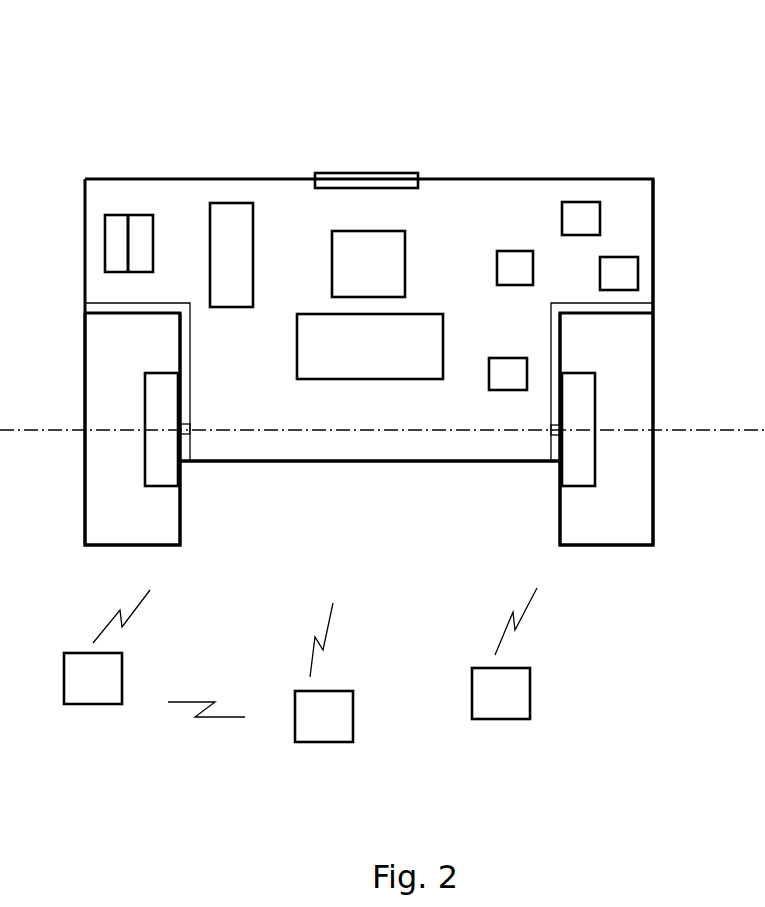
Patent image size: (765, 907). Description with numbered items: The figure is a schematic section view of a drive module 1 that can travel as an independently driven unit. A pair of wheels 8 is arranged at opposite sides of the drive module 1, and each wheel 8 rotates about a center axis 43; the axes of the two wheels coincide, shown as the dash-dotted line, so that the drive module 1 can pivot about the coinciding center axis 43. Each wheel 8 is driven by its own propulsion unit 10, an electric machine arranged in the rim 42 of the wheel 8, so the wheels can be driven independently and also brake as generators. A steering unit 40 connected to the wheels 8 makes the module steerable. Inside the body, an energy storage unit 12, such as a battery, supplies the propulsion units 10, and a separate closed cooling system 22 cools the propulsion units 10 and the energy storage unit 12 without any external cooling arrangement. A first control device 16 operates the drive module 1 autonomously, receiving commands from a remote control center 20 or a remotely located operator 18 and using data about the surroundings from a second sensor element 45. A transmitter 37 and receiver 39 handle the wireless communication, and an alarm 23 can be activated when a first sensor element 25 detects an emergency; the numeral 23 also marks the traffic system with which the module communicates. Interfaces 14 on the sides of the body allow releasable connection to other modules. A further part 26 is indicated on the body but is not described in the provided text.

The drive module 1 is at (157, 92).
The wheels 8 is at (180, 513).
The propulsion unit 10 is at (180, 472).
The energy storage unit 12 is at (443, 345).
The interface 14 is at (393, 173).
The first control device 16 is at (332, 231).
The operator 18 is at (530, 697).
The control center 20 is at (122, 677).
The separate closed cooling system 22 is at (210, 203).
The alarm 23 is at (600, 203).
The first sensor element 25 is at (638, 262).
The chassis 26 is at (653, 205).
The transmitter 37 is at (103, 228).
The receiver 39 is at (142, 215).
The steering unit 40 is at (503, 390).
The rim 42 is at (168, 372).
The center axis 43 is at (45, 430).
The second sensor element 45 is at (533, 251).